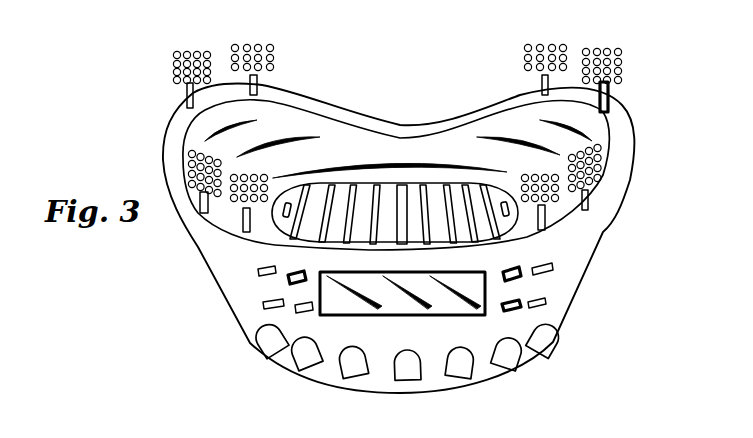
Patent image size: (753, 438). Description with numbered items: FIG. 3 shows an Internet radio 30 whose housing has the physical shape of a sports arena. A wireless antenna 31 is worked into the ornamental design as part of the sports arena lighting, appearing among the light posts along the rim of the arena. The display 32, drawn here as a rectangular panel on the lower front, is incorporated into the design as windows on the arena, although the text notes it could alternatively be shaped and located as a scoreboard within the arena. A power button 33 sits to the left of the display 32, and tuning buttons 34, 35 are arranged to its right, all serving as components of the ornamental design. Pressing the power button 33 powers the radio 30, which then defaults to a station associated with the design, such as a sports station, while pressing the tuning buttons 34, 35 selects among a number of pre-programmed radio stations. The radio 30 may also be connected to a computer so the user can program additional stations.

The radio 30 is at (217, 242).
The wireless antenna 31 is at (608, 95).
The display 32 is at (365, 315).
The power button 33 is at (288, 278).
The tuning button 34 is at (519, 267).
The tuning button 35 is at (520, 308).